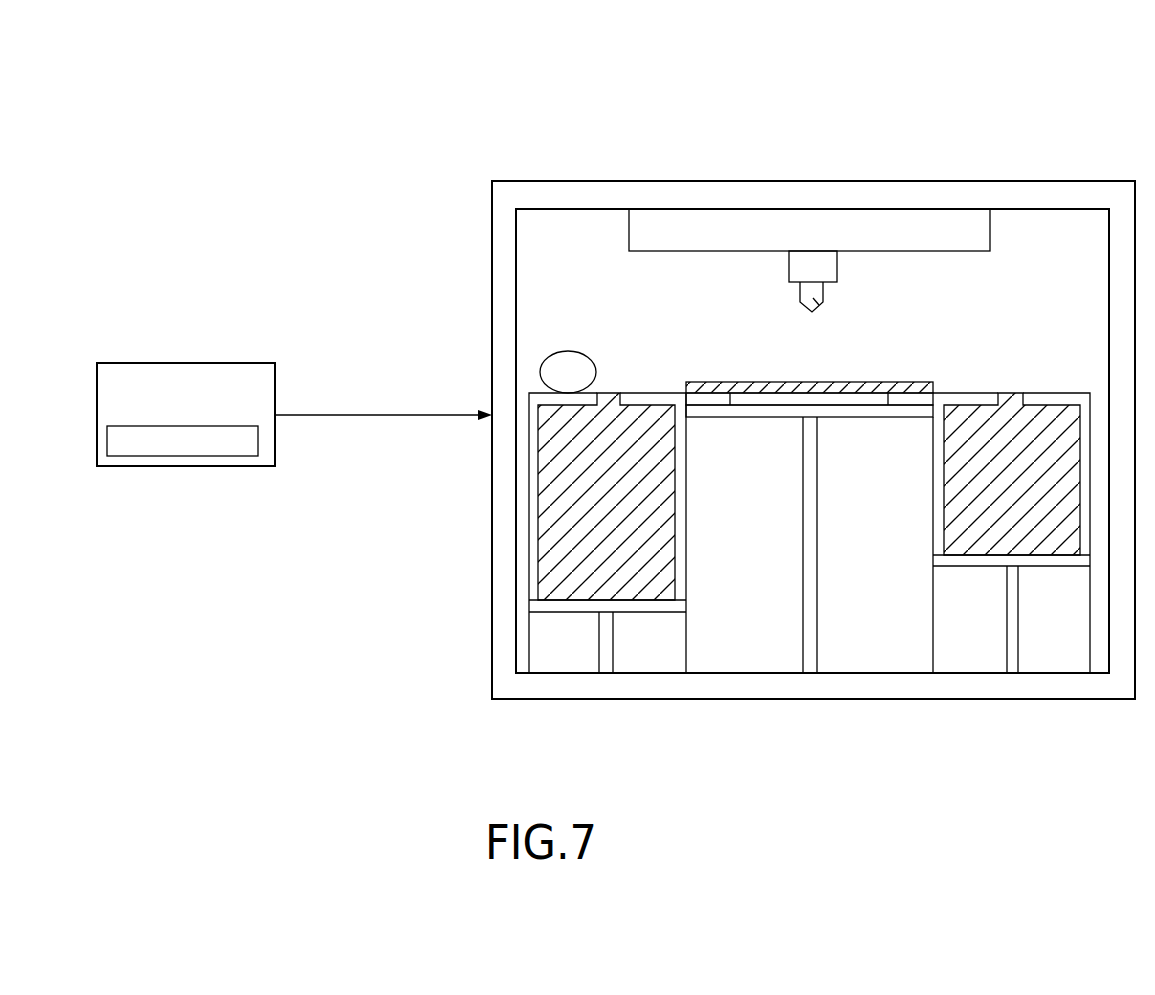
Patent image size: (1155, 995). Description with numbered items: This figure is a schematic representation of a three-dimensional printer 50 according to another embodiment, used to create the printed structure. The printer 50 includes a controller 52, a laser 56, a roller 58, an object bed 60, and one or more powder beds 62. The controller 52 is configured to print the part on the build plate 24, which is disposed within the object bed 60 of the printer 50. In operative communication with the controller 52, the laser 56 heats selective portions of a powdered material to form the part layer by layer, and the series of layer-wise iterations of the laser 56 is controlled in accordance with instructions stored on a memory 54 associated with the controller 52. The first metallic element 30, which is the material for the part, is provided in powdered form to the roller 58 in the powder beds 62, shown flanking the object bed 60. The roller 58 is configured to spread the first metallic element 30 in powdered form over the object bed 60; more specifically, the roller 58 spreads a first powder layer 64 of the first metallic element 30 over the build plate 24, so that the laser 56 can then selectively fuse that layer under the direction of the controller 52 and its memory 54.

The 3D printer 50 is at (957, 105).
The controller 52 is at (203, 362).
The memory 54 is at (253, 453).
The laser 56 is at (815, 300).
The roller 58 is at (570, 350).
The first powder layer 64 is at (738, 388).
The build plate 24 is at (832, 395).
The first metallic element 30 is at (968, 420).
The object bed 60 is at (760, 417).
The powder beds 62 is at (634, 605).